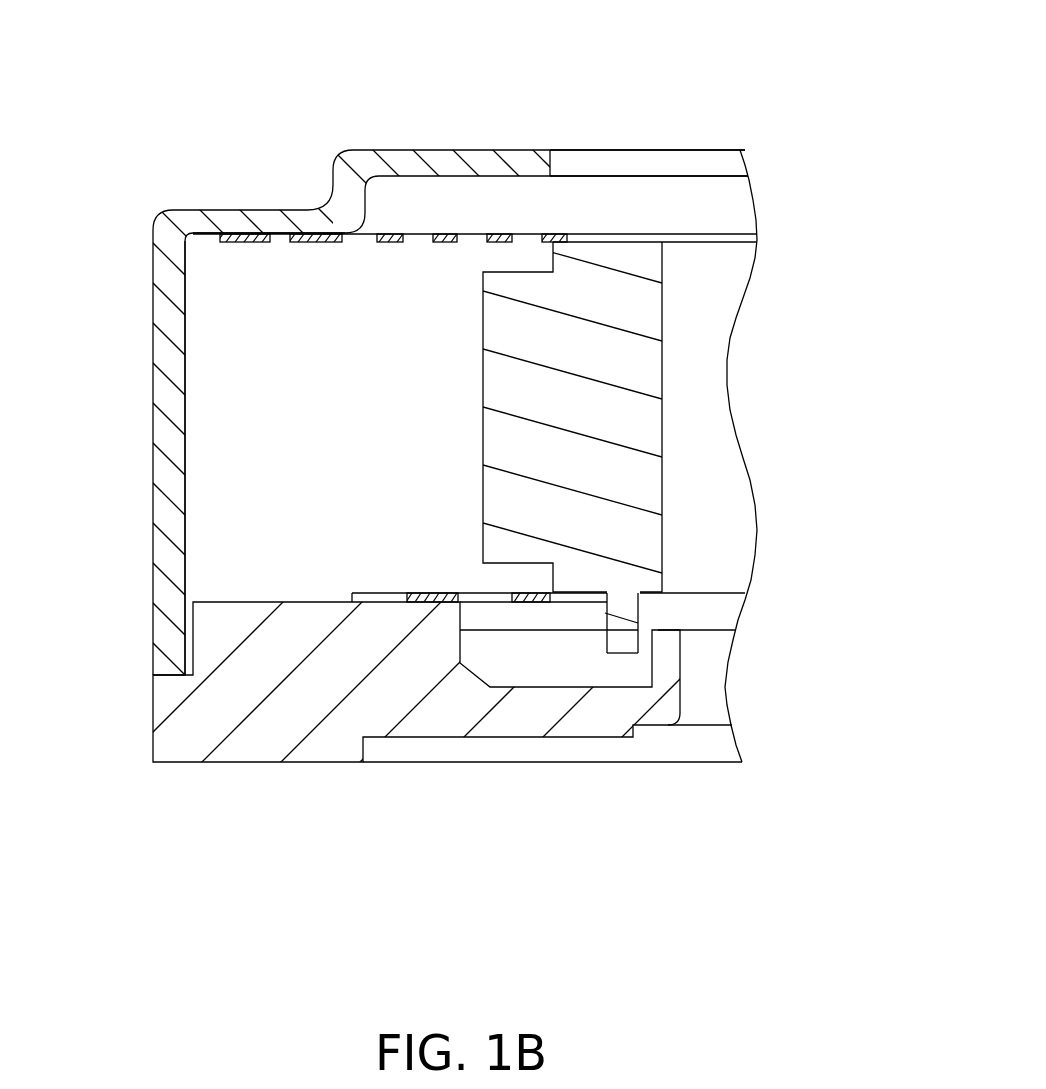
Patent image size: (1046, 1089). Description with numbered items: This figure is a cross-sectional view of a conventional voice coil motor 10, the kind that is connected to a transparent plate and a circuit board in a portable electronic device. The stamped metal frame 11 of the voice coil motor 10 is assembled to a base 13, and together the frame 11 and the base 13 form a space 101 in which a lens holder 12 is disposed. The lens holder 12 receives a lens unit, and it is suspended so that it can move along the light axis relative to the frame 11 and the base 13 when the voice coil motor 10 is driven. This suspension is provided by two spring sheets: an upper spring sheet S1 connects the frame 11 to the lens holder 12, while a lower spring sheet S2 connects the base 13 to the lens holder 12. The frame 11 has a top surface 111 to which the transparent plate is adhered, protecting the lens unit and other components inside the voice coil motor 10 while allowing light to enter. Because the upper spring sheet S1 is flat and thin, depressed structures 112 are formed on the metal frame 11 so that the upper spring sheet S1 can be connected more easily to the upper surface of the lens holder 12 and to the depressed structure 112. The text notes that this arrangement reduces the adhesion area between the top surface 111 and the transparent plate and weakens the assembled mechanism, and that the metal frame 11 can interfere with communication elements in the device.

The voice coil motor 10 is at (107, 24).
The frame 11 is at (150, 207).
The space 101 is at (225, 367).
The top surface 111 is at (512, 148).
The depressed structure 112 is at (203, 233).
The lens holder 12 is at (632, 365).
The base 13 is at (270, 720).
The upper spring sheet S1 is at (245, 234).
The lower spring sheet S2 is at (437, 597).